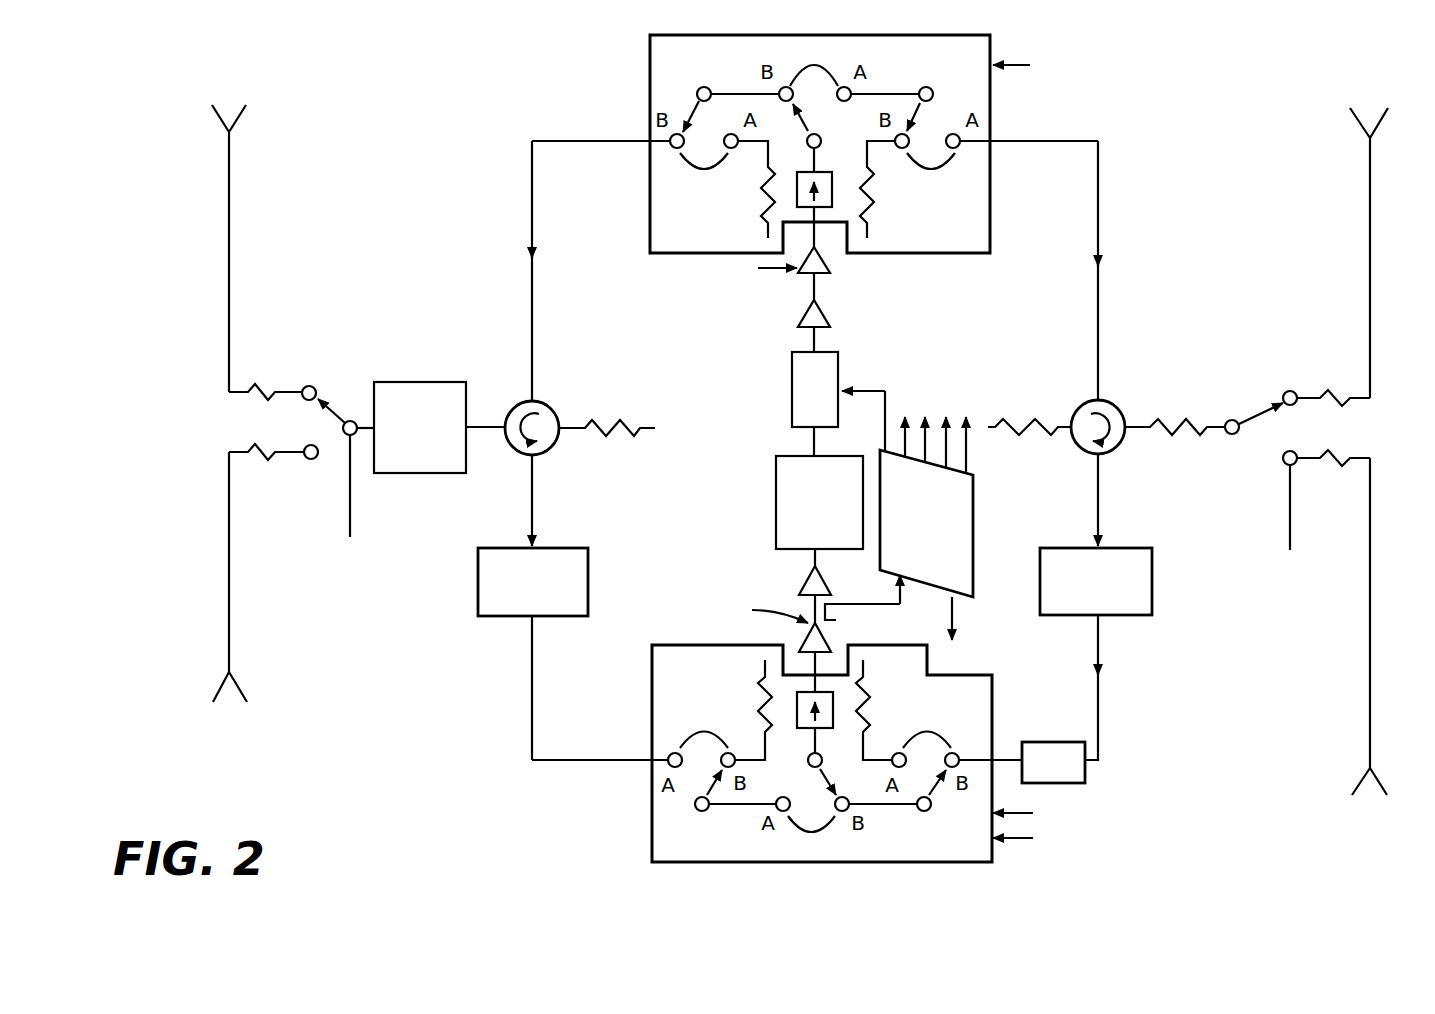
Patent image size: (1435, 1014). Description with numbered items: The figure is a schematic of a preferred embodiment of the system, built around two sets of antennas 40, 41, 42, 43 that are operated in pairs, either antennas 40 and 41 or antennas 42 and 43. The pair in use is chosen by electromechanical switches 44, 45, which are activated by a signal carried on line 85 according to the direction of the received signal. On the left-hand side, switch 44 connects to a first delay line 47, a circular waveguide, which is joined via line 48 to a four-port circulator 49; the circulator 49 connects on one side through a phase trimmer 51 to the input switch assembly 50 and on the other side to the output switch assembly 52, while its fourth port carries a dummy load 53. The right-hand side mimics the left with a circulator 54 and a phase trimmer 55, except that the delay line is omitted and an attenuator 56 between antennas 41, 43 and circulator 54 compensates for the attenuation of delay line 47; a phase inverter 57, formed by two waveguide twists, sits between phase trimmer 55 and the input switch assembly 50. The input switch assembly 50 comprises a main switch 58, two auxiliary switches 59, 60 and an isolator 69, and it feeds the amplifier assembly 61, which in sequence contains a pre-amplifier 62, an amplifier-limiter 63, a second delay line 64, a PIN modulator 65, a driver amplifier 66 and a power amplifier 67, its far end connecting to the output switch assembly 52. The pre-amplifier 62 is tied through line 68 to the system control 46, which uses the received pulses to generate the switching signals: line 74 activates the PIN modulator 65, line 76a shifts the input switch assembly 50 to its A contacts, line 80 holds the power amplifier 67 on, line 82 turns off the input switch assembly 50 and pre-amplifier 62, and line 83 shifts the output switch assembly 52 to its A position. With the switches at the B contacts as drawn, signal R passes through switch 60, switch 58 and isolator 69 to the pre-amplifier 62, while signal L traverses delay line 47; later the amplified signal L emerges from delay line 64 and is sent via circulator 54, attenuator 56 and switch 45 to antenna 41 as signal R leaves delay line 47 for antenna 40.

The antenna 40 is at (237, 120).
The antenna 41 is at (1377, 123).
The antenna 42 is at (243, 684).
The antenna 43 is at (1358, 783).
The electromechanical switch 44 is at (333, 412).
The electromechanical switch 45 is at (1248, 413).
The system control 46 is at (973, 505).
The first delay line 47 is at (420, 382).
The line 48 is at (483, 427).
The four-port circulator 49 is at (552, 446).
The input switch assembly 50 is at (652, 845).
The phase trimmer 51 is at (588, 590).
The output switch assembly 52 is at (650, 238).
The dummy load 53 is at (600, 426).
The circulator 54 is at (1113, 402).
The phase trimmer 55 is at (1152, 588).
The attenuator 56 is at (1163, 420).
The phase inverter 57 is at (1085, 767).
The main switch 58 is at (827, 772).
The auxiliary switch 59 is at (703, 730).
The auxiliary switch 60 is at (930, 730).
The amplifier assembly 61 is at (669, 554).
The pre-amplifier 62 is at (828, 644).
The amplifier-limiter 63 is at (800, 592).
The second delay line 64 is at (775, 487).
The PIN modulator 65 is at (790, 375).
The driver amplifier 66 is at (825, 312).
The power amplifier 67 is at (830, 268).
The line 68 is at (878, 605).
The isolator 69 is at (833, 720).
The line 74 is at (862, 393).
The line 76a is at (1030, 813).
The line 80 is at (775, 268).
The line 82 is at (1033, 865).
The line 83 is at (1018, 65).
The line 85 is at (352, 510).